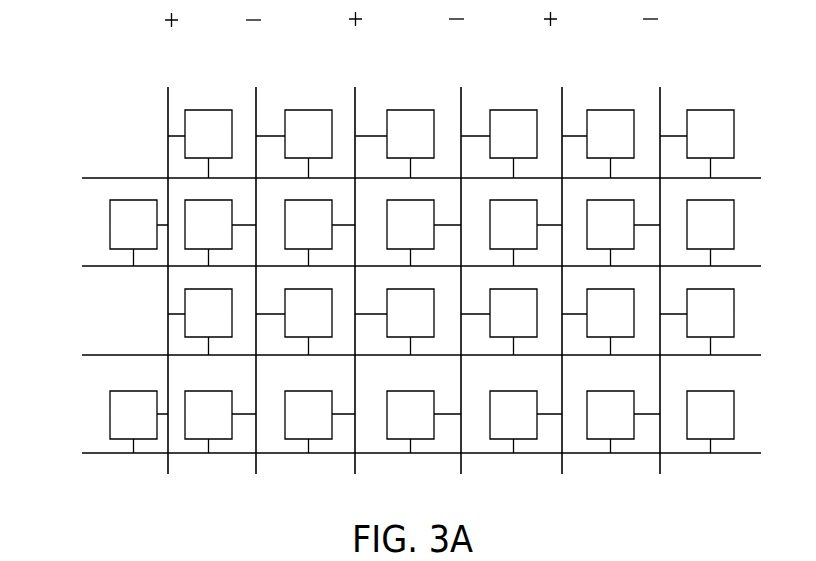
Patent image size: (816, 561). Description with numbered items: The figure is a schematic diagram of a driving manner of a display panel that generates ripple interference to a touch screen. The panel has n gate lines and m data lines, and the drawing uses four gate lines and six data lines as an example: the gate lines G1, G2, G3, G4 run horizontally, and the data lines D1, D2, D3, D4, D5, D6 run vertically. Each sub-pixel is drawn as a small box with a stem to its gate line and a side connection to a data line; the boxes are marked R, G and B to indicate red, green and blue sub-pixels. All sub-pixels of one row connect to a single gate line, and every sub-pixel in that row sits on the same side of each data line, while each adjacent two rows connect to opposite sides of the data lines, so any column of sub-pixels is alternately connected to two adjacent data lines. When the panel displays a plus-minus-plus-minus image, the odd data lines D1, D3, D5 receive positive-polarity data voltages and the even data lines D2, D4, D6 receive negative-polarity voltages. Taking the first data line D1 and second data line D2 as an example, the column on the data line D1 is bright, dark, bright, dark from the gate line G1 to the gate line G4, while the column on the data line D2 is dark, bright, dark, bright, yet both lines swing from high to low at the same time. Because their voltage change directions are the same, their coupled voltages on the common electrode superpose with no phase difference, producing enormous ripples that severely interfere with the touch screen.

The first data line D1 is at (170, 243).
The second data line D2 is at (255, 247).
The third data line D3 is at (357, 243).
The fourth data line D4 is at (455, 246).
The fifth data line D5 is at (555, 243).
The sixth data line D6 is at (652, 246).
The gate line G1 is at (397, 179).
The gate line G2 is at (397, 268).
The gate line G3 is at (397, 361).
The gate line G4 is at (397, 463).
The red sub-pixel R is at (212, 281).
The green sub-pixel G is at (408, 281).
The blue sub-pixel B is at (611, 281).